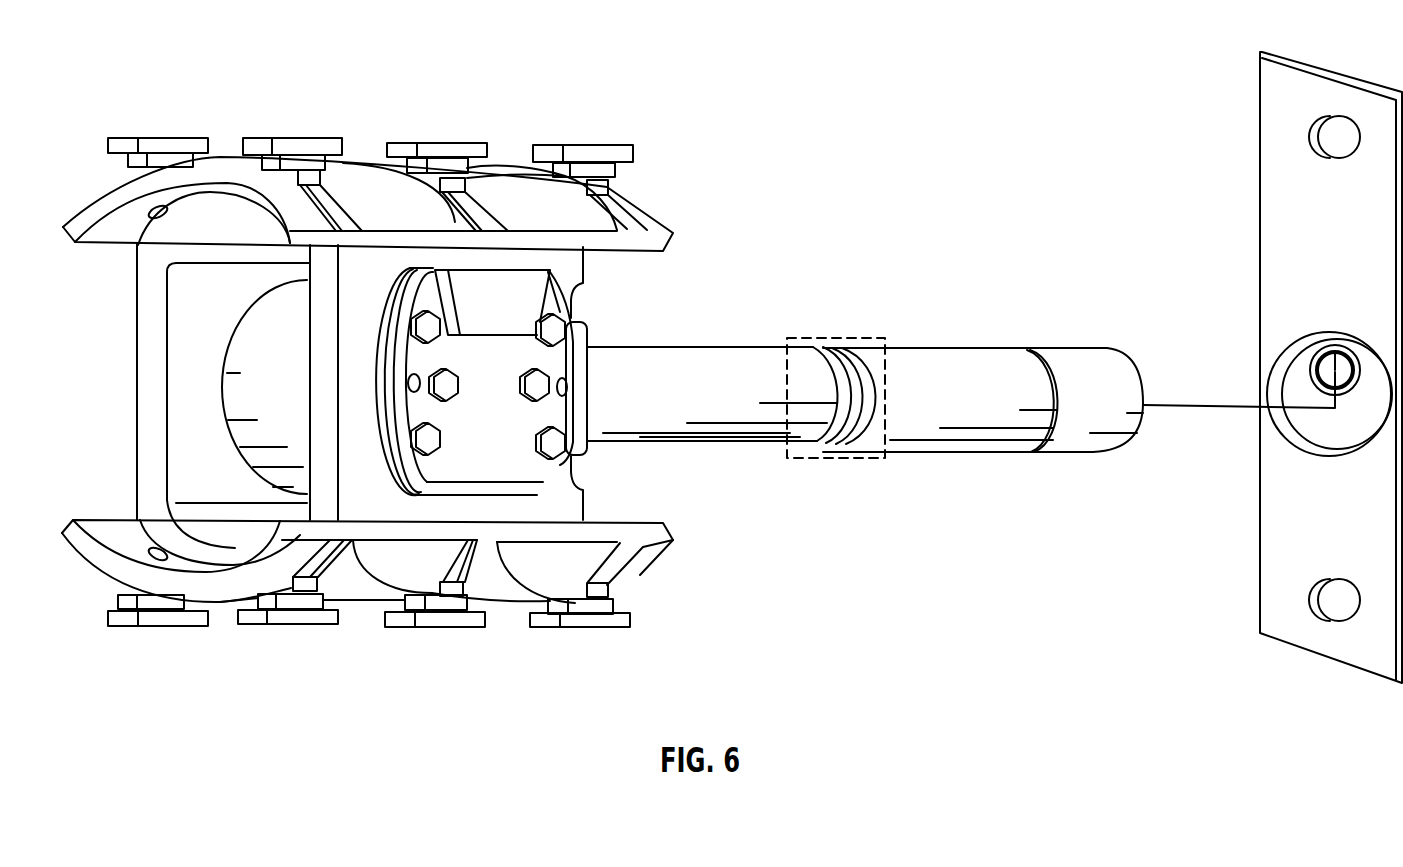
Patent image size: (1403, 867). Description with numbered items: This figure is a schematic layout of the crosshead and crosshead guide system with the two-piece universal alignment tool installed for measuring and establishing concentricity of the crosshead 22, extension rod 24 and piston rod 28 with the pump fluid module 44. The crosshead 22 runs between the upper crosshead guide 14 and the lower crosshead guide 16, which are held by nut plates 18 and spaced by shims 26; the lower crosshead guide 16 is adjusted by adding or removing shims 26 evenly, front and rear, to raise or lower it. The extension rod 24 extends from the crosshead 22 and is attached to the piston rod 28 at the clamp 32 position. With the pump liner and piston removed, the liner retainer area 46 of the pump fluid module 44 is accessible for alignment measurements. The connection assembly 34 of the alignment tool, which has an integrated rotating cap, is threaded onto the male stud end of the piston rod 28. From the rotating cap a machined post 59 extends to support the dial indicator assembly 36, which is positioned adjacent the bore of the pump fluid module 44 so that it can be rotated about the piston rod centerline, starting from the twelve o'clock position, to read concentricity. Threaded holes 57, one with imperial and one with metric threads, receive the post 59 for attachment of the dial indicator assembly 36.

The upper crosshead guide 14 is at (666, 214).
The lower crosshead guide 16 is at (670, 539).
The nut plate 18 is at (602, 140).
The shims 26 is at (122, 163).
The crosshead 22 is at (356, 304).
The extension rod 24 is at (703, 346).
The clamp 32 is at (833, 337).
The piston rod 28 is at (950, 348).
The connection assembly 34 is at (1063, 458).
The post 59 is at (1193, 403).
The pump fluid module 44 is at (1315, 304).
The threaded holes 57 is at (1343, 137).
The liner retainer area 46 is at (1292, 439).
The dial indicator assembly 36 is at (1342, 350).